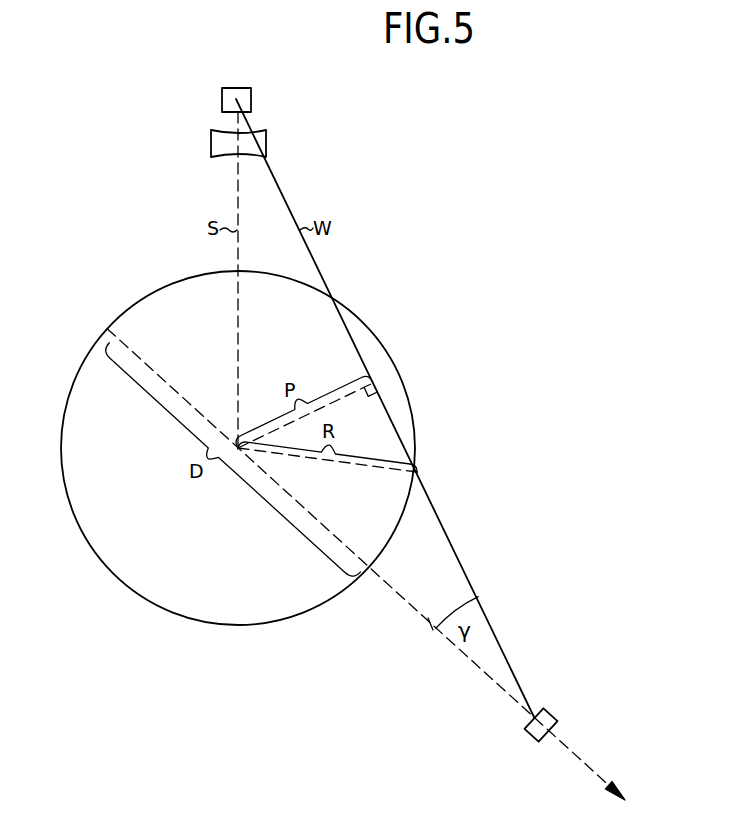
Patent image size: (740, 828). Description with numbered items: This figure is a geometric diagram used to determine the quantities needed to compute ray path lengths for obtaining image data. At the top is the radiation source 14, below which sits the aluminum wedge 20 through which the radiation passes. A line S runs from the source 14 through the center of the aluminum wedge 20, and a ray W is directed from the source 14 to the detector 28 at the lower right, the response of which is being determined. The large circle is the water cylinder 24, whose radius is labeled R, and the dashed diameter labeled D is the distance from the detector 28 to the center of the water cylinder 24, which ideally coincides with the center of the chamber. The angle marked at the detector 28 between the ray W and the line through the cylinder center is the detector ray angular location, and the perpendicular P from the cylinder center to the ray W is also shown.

The radiation source 14 is at (221, 96).
The aluminum wedge 20 is at (211, 143).
The water cylinder 24 is at (80, 372).
The detector 28 is at (549, 712).